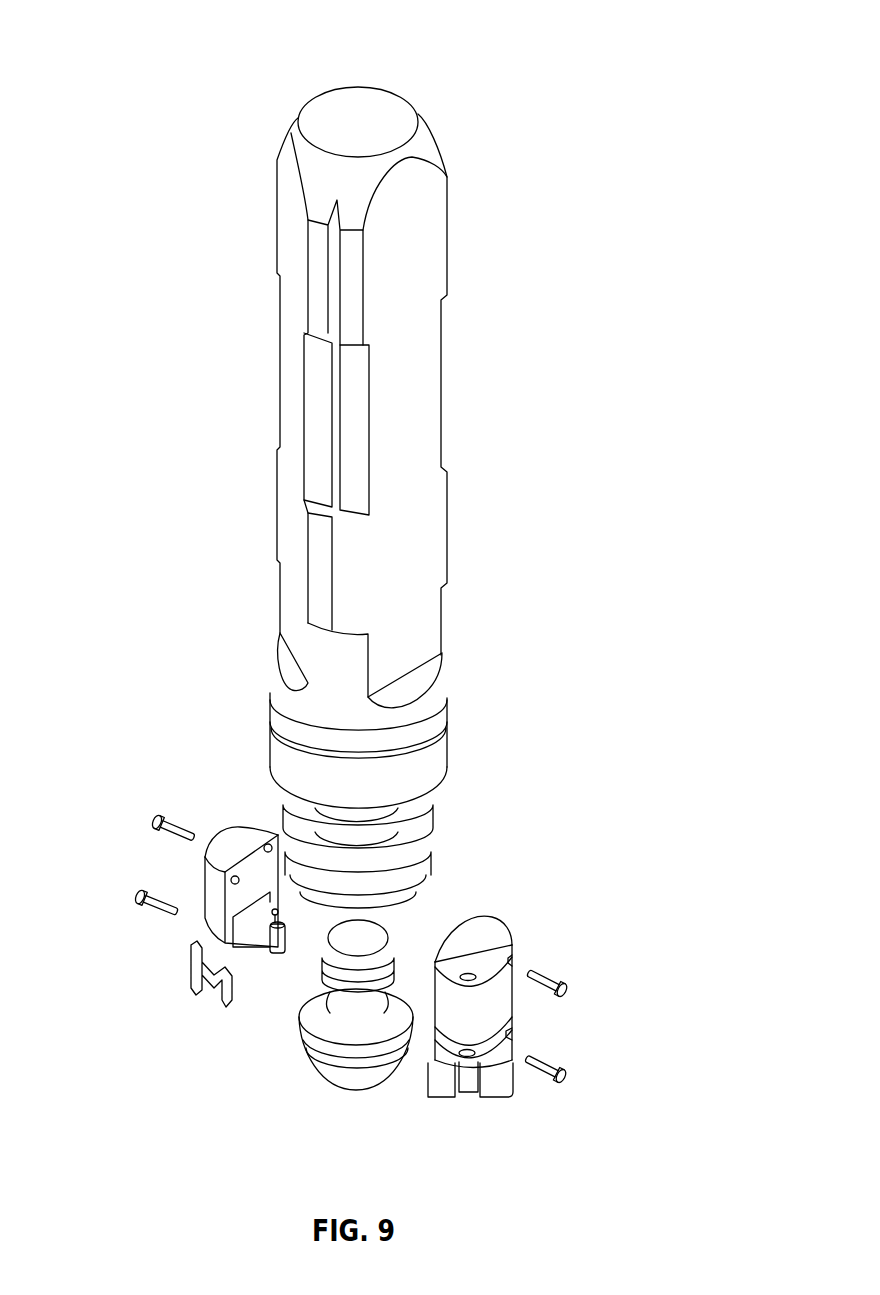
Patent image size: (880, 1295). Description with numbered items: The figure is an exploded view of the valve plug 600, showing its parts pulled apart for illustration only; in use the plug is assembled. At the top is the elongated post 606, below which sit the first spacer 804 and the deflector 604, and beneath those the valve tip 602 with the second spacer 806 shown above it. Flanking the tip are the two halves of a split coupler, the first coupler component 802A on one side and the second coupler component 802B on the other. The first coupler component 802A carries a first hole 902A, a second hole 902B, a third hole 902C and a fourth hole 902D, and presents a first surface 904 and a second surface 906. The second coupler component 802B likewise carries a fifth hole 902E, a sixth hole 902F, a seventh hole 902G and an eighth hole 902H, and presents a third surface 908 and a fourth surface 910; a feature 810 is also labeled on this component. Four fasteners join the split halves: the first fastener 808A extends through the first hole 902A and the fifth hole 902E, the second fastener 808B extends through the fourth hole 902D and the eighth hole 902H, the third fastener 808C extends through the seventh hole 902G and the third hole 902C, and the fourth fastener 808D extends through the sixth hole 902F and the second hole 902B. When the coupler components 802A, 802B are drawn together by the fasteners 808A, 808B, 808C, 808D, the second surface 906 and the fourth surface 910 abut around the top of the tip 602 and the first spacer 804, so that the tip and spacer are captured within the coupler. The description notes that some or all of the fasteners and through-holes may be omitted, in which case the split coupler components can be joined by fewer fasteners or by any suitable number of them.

The plug 600 is at (488, 43).
The post 606 is at (436, 140).
The first spacer 804 is at (433, 815).
The deflector 604 is at (435, 853).
The valve tip 602 is at (352, 1093).
The second spacer 806 is at (385, 930).
The first surface 904 is at (205, 928).
The first coupler component 802A is at (245, 828).
The first hole 902A is at (272, 833).
The second hole 902B is at (237, 882).
The third hole 902C is at (225, 970).
The fourth hole 902D is at (281, 950).
The second surface 906 is at (215, 998).
The first fastener 808A is at (160, 892).
The second fastener 808B is at (162, 812).
The third surface 908 is at (467, 1032).
The second coupler component 802B is at (503, 920).
The fourth surface 910 is at (432, 958).
The fifth hole 902E is at (512, 945).
The sixth hole 902F is at (468, 981).
The seventh hole 902G is at (461, 1062).
The eighth hole 902H is at (510, 1032).
The bottom tabs 810 is at (440, 1097).
The third fastener 808C is at (548, 1058).
The fourth fastener 808D is at (560, 982).